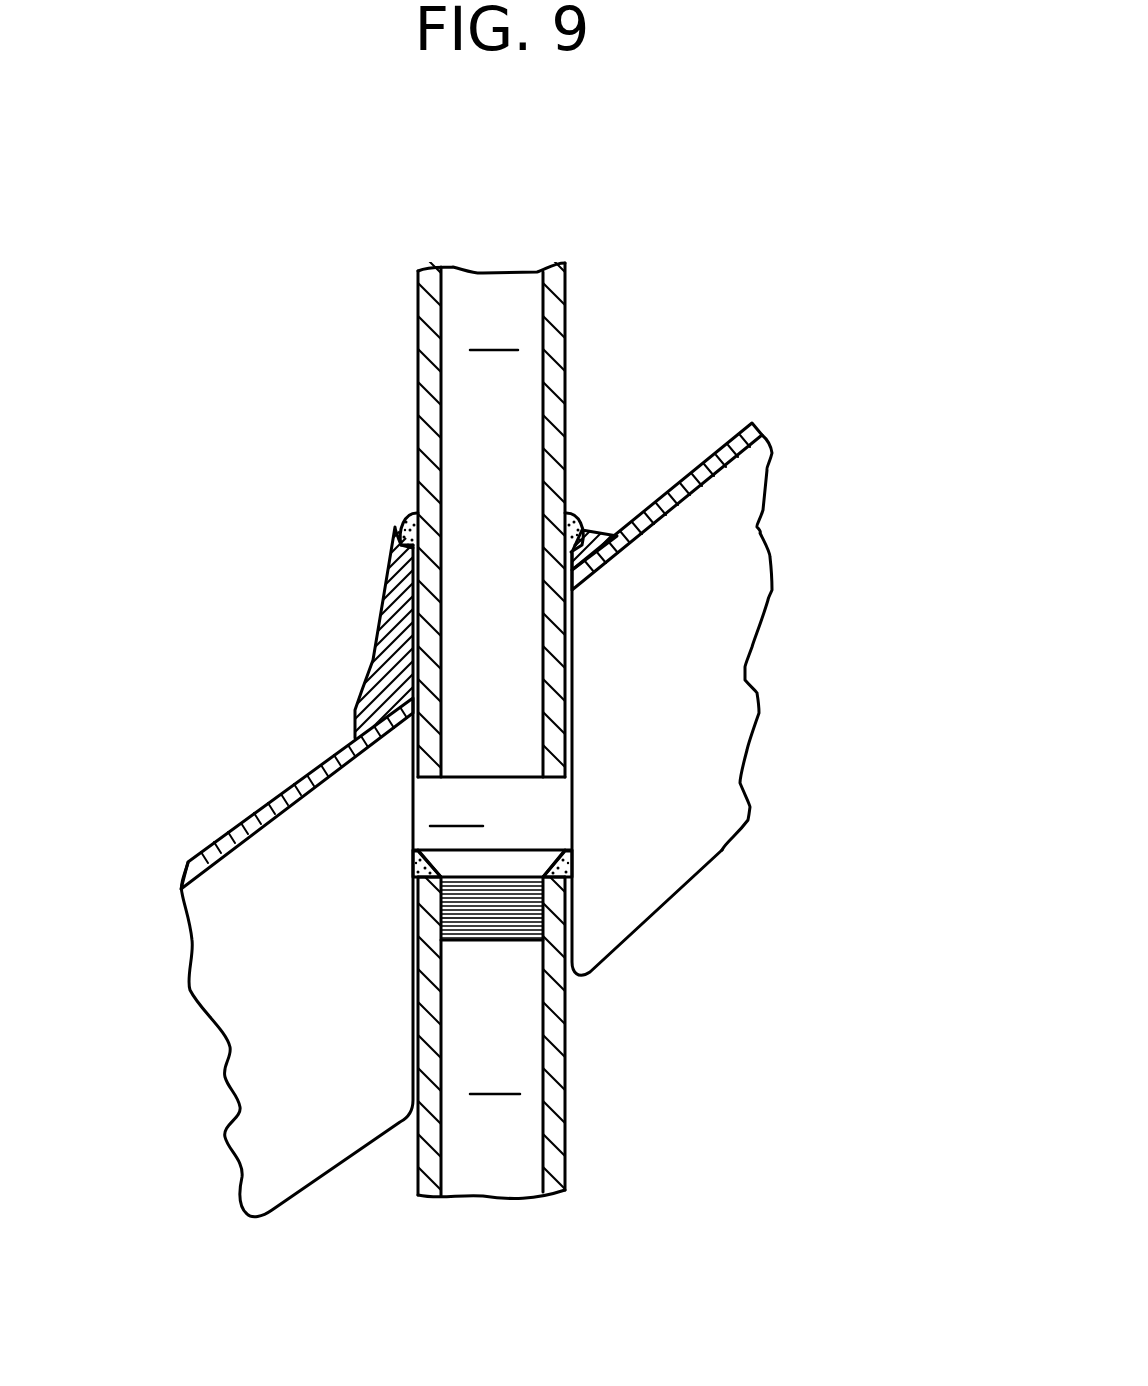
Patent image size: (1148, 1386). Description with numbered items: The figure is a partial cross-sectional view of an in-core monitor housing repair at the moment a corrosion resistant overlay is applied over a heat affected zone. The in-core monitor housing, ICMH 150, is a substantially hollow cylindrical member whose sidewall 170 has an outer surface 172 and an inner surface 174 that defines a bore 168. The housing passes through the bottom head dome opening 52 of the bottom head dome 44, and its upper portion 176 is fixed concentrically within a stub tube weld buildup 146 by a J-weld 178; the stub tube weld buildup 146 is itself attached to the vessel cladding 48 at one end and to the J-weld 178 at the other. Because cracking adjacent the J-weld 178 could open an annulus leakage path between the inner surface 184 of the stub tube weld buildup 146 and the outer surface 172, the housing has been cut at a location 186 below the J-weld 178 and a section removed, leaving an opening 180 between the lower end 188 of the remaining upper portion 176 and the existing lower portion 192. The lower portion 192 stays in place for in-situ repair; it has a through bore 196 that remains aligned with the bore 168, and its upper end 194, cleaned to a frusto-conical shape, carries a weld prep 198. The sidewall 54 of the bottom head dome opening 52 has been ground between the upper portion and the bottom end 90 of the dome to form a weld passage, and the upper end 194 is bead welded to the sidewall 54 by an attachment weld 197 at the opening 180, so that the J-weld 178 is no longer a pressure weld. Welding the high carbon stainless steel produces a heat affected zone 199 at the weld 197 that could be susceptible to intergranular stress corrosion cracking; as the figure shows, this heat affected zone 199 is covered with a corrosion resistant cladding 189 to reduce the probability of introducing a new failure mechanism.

The in-core monitor housing (ICMH) 150 is at (578, 216).
The sidewall 170 is at (434, 271).
The outer surface 172 is at (415, 308).
The inner surface 174 is at (441, 305).
The bore 168 is at (494, 328).
The upper portion 176 is at (591, 301).
The J-weld 178 is at (398, 520).
The stub tube weld buildup 146 is at (386, 600).
The vessel cladding 48 is at (252, 812).
The bottom head dome 44 is at (722, 850).
The inner surface of stub tube buildup 184 is at (416, 643).
The lower end of upper portion 188 is at (532, 755).
The cut location 186 is at (556, 783).
The sidewall of bottom head dome opening 54 is at (562, 811).
The opening 180 is at (456, 806).
The attachment weld 197 is at (442, 856).
The upper end 194 is at (574, 870).
The weld prep 198 is at (413, 862).
The heat affected zone 199 is at (400, 880).
The cladding 189 is at (496, 931).
The through bore 196 is at (494, 1075).
The bottom head dome opening 52 is at (580, 993).
The lower portion 192 is at (600, 1145).
The bottom end 90 is at (316, 1215).